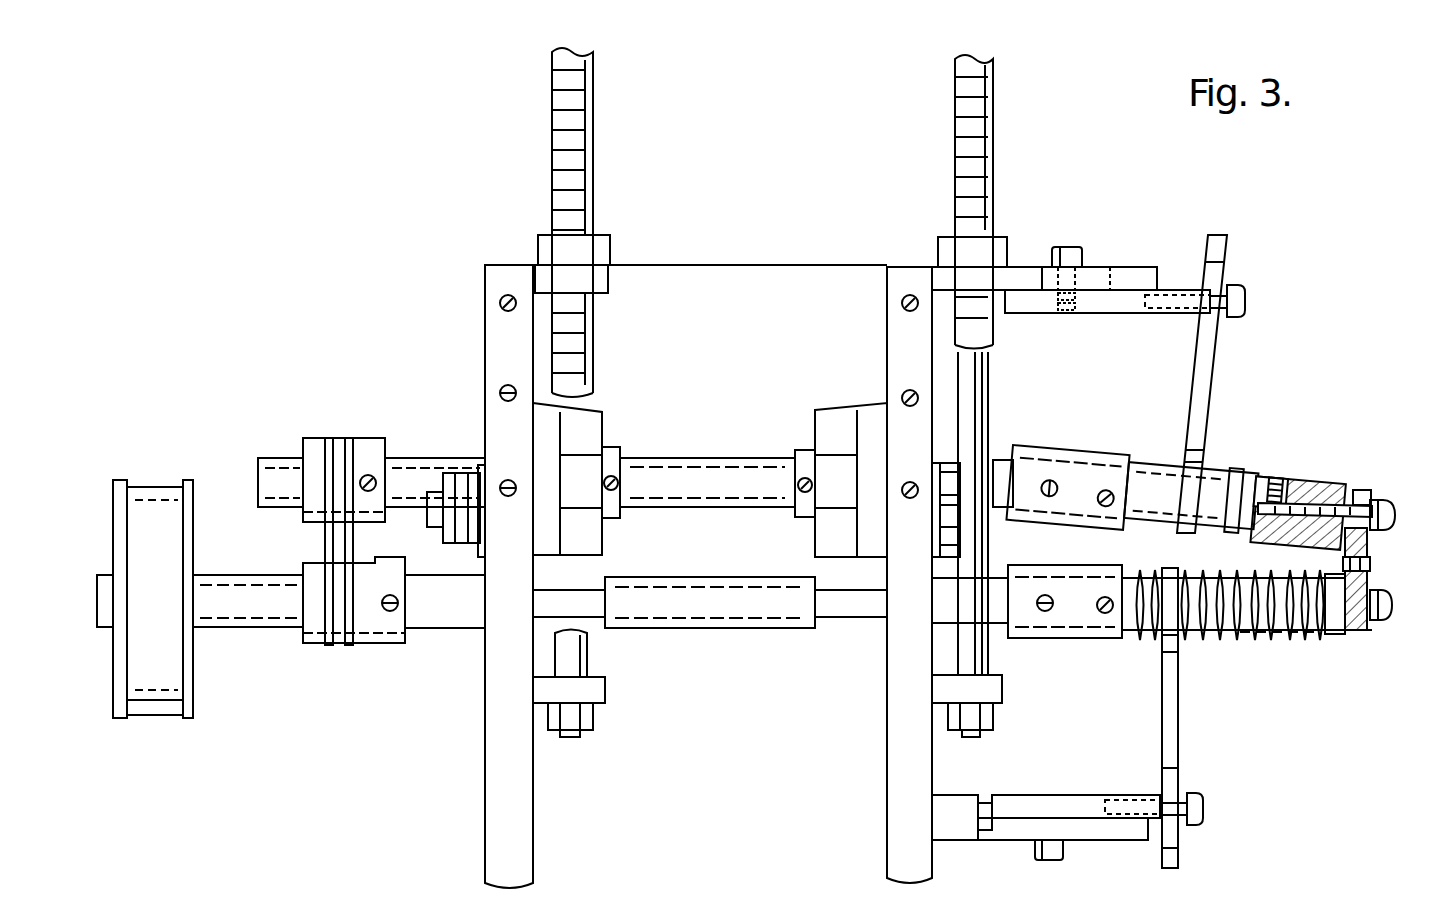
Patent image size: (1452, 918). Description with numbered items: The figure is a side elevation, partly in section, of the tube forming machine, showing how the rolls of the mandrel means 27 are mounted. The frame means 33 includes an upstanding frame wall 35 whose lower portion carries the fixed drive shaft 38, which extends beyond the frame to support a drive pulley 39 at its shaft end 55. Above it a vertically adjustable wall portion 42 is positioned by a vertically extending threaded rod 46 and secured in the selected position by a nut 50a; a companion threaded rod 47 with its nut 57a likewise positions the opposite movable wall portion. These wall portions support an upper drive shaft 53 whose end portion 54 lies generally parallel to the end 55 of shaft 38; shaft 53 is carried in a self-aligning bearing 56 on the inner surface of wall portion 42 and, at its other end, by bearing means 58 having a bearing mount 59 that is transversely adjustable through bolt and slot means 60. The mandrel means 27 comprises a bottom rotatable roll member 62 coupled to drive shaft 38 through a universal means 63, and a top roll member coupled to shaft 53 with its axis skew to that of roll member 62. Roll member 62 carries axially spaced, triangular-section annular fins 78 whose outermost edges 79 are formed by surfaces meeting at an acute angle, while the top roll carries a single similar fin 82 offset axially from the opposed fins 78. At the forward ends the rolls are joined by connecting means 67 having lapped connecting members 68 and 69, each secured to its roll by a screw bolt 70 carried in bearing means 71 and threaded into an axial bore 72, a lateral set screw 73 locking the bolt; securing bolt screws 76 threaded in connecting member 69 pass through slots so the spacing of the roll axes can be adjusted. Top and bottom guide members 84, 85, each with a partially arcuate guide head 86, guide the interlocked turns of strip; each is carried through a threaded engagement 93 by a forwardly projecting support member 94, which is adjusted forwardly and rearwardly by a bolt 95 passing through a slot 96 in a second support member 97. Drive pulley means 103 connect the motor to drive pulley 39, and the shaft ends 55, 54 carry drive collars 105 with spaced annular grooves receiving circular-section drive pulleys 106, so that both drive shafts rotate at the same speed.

The mandrel means 27 is at (1302, 666).
The frame means 33 is at (517, 813).
The frame wall 35 is at (891, 812).
The fixed drive shaft 38 is at (707, 629).
The drive pulley 39 is at (127, 480).
The vertically adjustable wall portion 42 is at (490, 323).
The threaded rod 46 is at (583, 112).
The threaded rod 47 is at (992, 100).
The nut 50a is at (610, 240).
The drive shaft 53 is at (690, 460).
The shaft end portion 54 is at (272, 470).
The shaft end 55 is at (237, 618).
The self-aligning bearing 56 is at (616, 450).
The adjusting nut 57a is at (945, 245).
The bearing means 58 is at (815, 410).
The bearing mount 59 is at (862, 425).
The bolt and slot means 60 is at (930, 558).
The bottom rotatable roll member 62 is at (1335, 637).
The universal means 63 is at (1065, 632).
The connecting means 67 is at (1368, 545).
The connecting member 68 is at (1365, 488).
The connecting member 69 is at (1362, 636).
The screw bolt 70 is at (1388, 503).
The bearing means 71 is at (1367, 497).
The axial bore 72 is at (1307, 478).
The lateral set screw 73 is at (1277, 478).
The securing bolt screws 76 is at (1371, 564).
The fins 78 is at (1220, 640).
The outermost edge 79 is at (1267, 640).
The fin 82 is at (1240, 470).
The top guide member 84 is at (1216, 383).
The bottom guide member 85 is at (1188, 755).
The guide head 86 is at (1167, 630).
The threaded engagement 93 is at (1188, 298).
The support member 94 is at (1137, 311).
The bolt 95 is at (1078, 248).
The slot 96 is at (1103, 268).
The second support member 97 is at (1025, 265).
The drive pulley means 103 is at (145, 487).
The drive collar 105 is at (371, 447).
The drive pulleys 106 is at (350, 438).